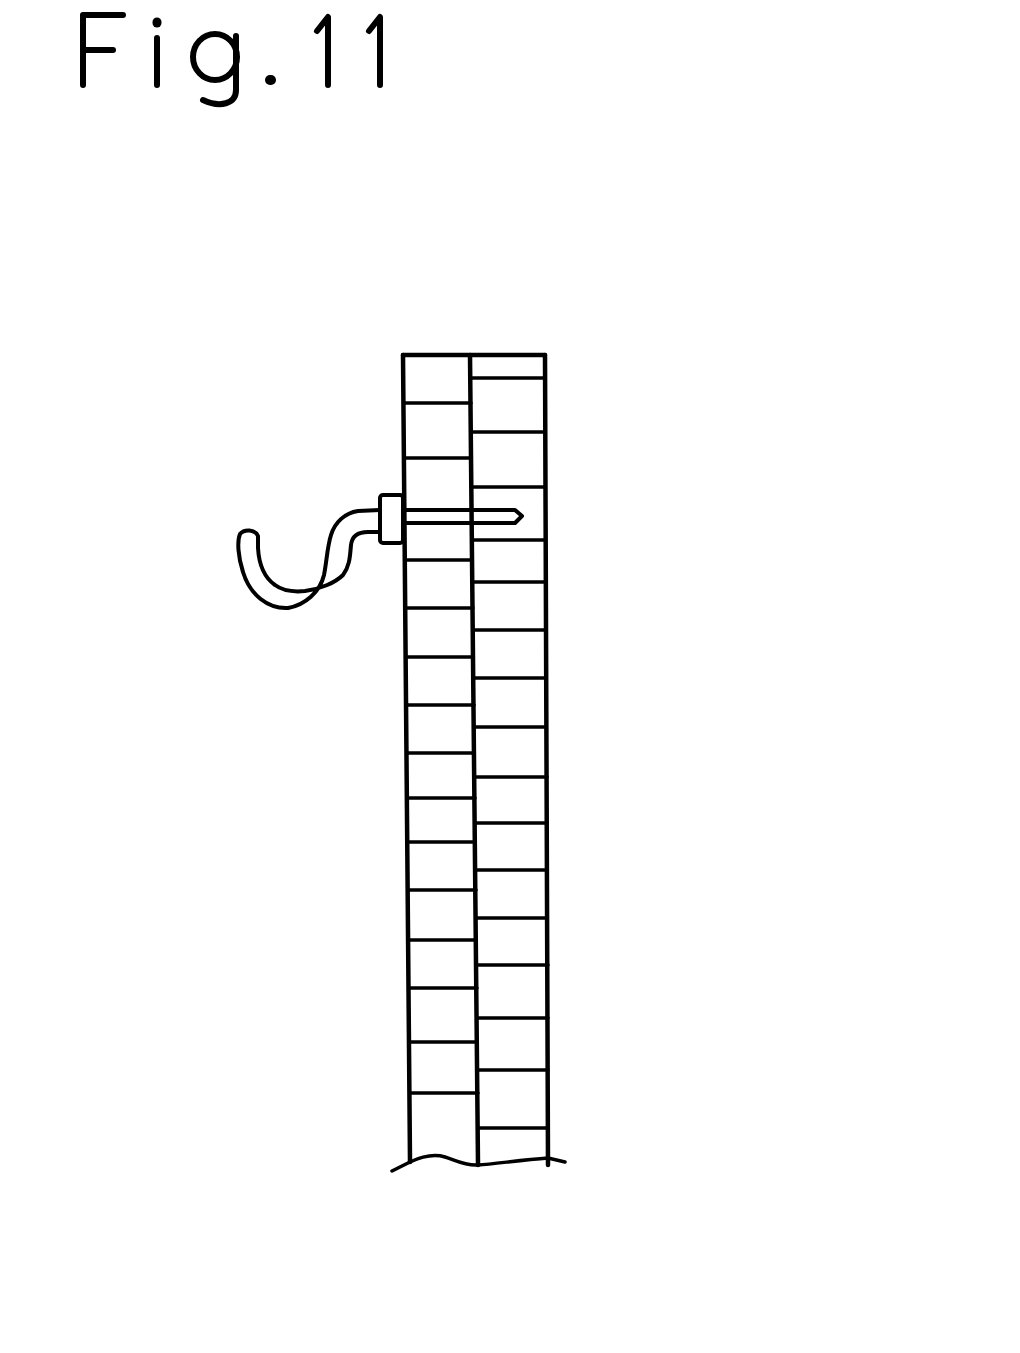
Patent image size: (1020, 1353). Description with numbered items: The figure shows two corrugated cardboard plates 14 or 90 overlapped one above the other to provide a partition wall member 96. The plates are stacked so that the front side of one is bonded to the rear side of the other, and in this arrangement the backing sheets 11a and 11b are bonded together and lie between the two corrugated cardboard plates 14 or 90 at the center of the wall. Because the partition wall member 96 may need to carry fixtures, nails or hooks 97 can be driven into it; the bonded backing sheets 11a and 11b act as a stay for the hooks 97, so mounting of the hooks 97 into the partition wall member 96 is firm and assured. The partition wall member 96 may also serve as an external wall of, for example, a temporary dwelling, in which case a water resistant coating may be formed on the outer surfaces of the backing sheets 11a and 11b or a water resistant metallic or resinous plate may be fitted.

The backing sheet 11a is at (98, 862).
The backing sheet 11b is at (100, 1002).
The corrugated cardboard plate 14 is at (437, 332).
The corrugated cardboard plate 90 is at (474, 663).
The partition wall member 96 is at (573, 612).
The hook 97 is at (275, 607).